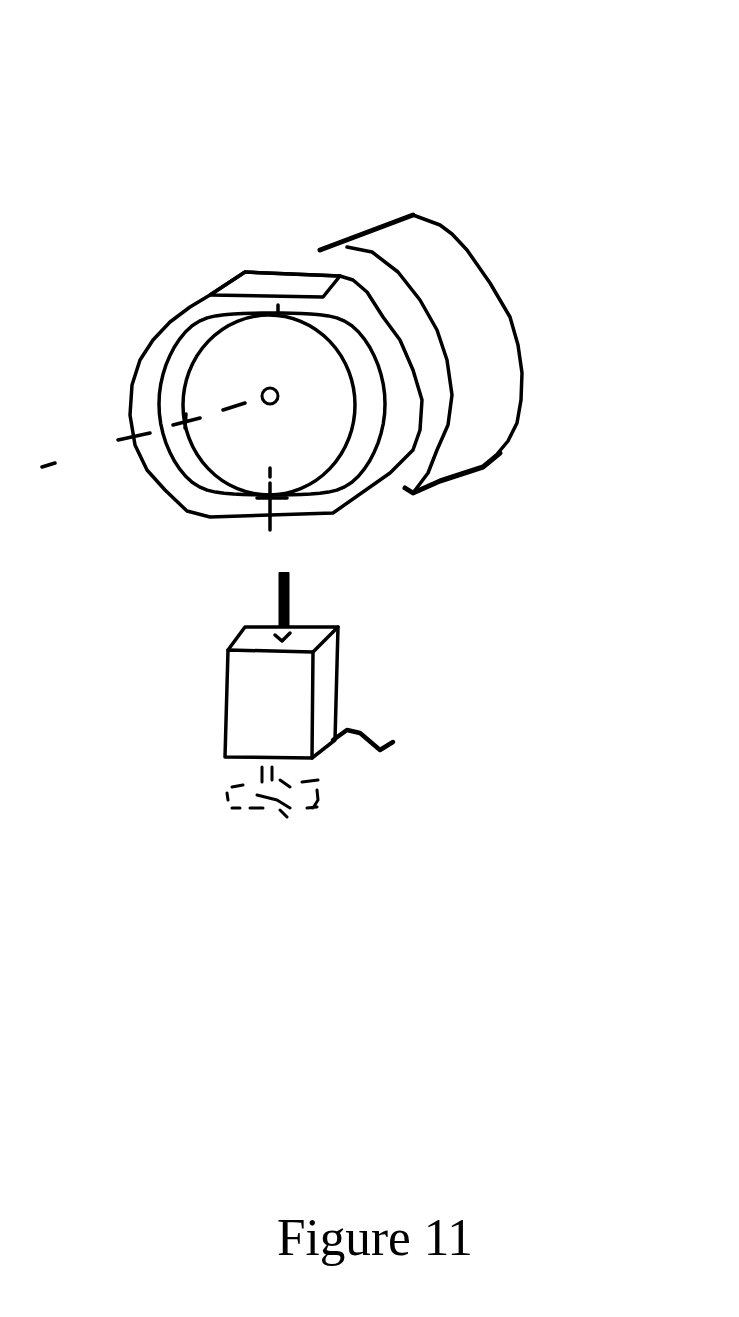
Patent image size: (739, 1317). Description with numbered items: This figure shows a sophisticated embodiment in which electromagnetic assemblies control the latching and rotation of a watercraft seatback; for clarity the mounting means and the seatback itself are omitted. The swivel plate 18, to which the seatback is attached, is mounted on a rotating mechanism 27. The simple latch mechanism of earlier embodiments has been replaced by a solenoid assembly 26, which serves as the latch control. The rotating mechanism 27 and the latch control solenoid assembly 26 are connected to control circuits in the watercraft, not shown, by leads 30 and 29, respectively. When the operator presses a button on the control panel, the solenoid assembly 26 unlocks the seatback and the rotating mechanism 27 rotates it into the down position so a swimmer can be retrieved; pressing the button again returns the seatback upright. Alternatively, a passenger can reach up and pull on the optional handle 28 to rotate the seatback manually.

The swivel plate 18 is at (172, 108).
The rotating mechanism 27 is at (437, 240).
The lead 29 is at (473, 447).
The solenoid assembly 26 is at (430, 902).
The handle 28 is at (287, 810).
The lead 30 is at (380, 750).